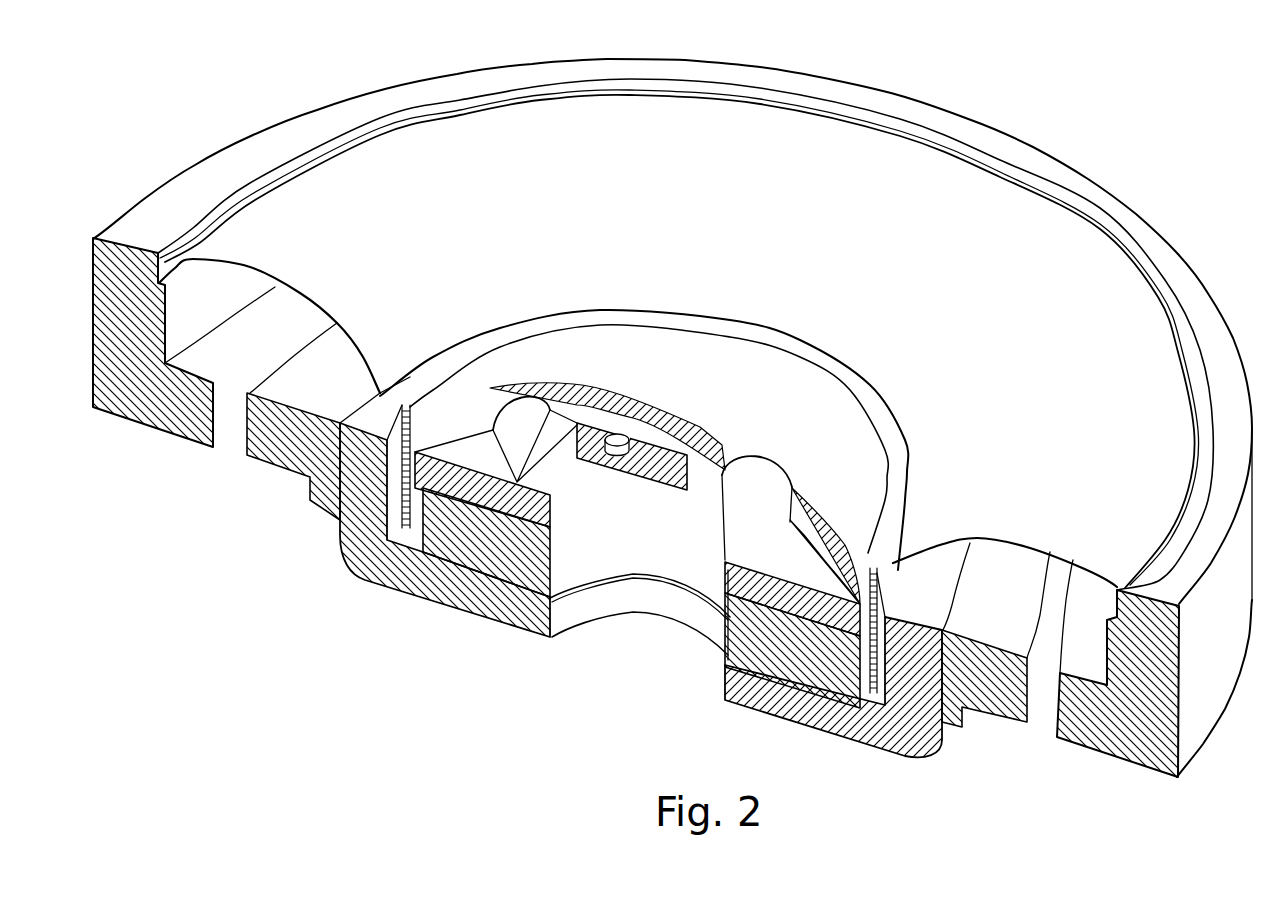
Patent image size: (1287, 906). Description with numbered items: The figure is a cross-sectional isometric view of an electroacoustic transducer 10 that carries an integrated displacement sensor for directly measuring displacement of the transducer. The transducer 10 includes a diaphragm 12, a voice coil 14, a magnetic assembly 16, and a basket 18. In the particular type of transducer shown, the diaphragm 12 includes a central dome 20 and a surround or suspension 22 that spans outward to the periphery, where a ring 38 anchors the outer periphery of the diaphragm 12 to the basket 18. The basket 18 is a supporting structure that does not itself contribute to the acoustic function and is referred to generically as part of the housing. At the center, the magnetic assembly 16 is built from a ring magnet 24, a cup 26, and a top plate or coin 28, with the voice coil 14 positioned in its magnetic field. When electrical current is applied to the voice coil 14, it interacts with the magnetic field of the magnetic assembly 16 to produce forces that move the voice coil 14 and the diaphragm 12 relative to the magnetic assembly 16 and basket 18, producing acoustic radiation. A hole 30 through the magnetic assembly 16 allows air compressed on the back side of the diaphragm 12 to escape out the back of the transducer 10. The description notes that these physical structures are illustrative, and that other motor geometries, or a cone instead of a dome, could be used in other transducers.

The electroacoustic transducer 10 is at (260, 100).
The diaphragm 12 is at (533, 178).
The voice coil 14 is at (880, 597).
The magnetic assembly 16 is at (740, 716).
The basket 18 is at (191, 414).
The dome 20 is at (795, 423).
The surround or suspension 22 is at (980, 390).
The ring magnet 24 is at (590, 565).
The cup 26 is at (598, 618).
The top plate or coin 28 is at (765, 558).
The hole 30 is at (634, 636).
The ring 38 is at (196, 219).